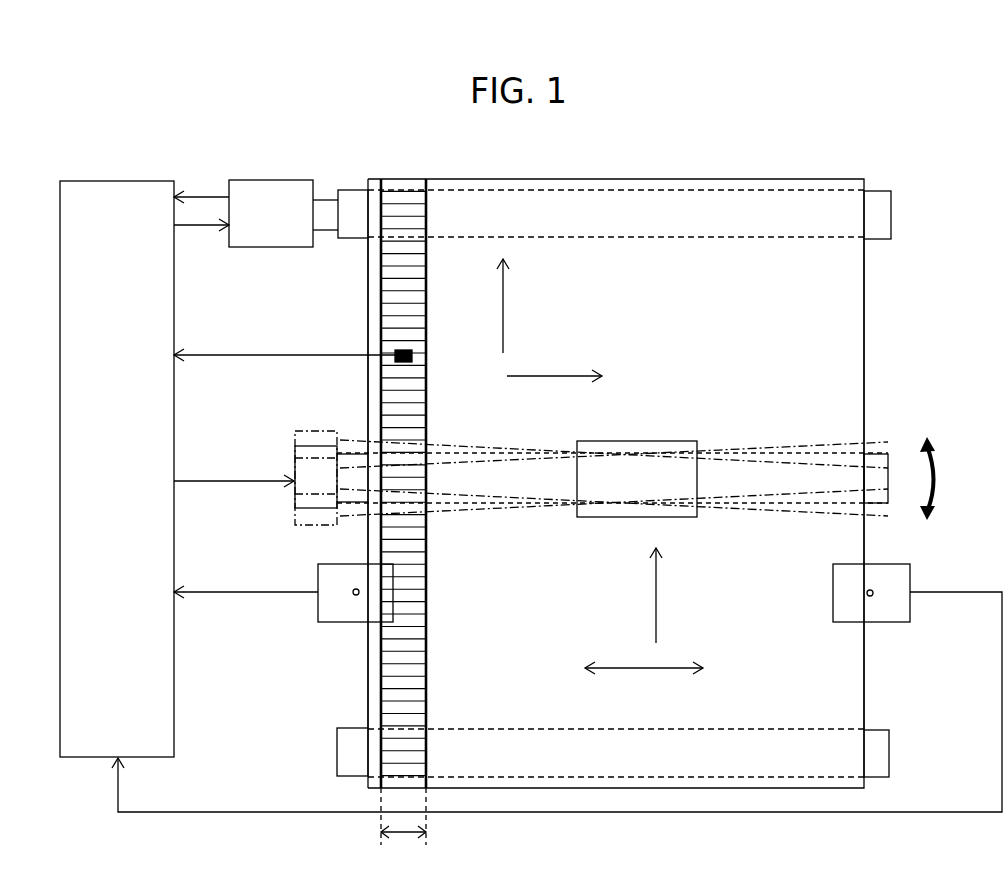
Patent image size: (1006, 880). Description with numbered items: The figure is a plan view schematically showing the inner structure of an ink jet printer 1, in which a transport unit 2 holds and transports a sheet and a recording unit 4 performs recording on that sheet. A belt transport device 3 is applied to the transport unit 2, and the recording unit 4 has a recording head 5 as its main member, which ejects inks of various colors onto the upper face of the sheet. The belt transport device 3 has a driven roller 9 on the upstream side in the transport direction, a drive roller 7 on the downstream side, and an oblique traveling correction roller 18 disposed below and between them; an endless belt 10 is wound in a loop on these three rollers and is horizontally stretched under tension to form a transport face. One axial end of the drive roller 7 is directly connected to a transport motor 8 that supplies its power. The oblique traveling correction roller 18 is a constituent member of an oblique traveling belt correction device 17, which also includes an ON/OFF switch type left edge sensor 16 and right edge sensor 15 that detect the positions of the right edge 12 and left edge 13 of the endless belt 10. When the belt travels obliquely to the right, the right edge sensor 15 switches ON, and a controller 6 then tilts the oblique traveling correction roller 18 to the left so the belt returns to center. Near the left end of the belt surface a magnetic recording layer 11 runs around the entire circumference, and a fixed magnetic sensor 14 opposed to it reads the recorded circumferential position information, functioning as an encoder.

The ink jet printer 1 is at (512, 482).
The transport unit 2 is at (512, 482).
The belt transport device 3 is at (168, 152).
The recording unit 4 is at (667, 432).
The recording head 5 is at (732, 431).
The controller 6 is at (58, 368).
The drive roller 7 is at (882, 210).
The transport motor 8 is at (266, 195).
The driven roller 9 is at (883, 752).
The endless belt 10 is at (836, 326).
The magnetic recording layer 11 is at (405, 210).
The right edge 12 is at (866, 685).
The left edge 13 is at (364, 658).
The magnetic sensor 14 is at (420, 368).
The right edge sensor 15 is at (893, 582).
The left edge sensor 16 is at (330, 580).
The oblique traveling belt correction device 17 is at (306, 434).
The oblique traveling correction roller 18 is at (556, 450).